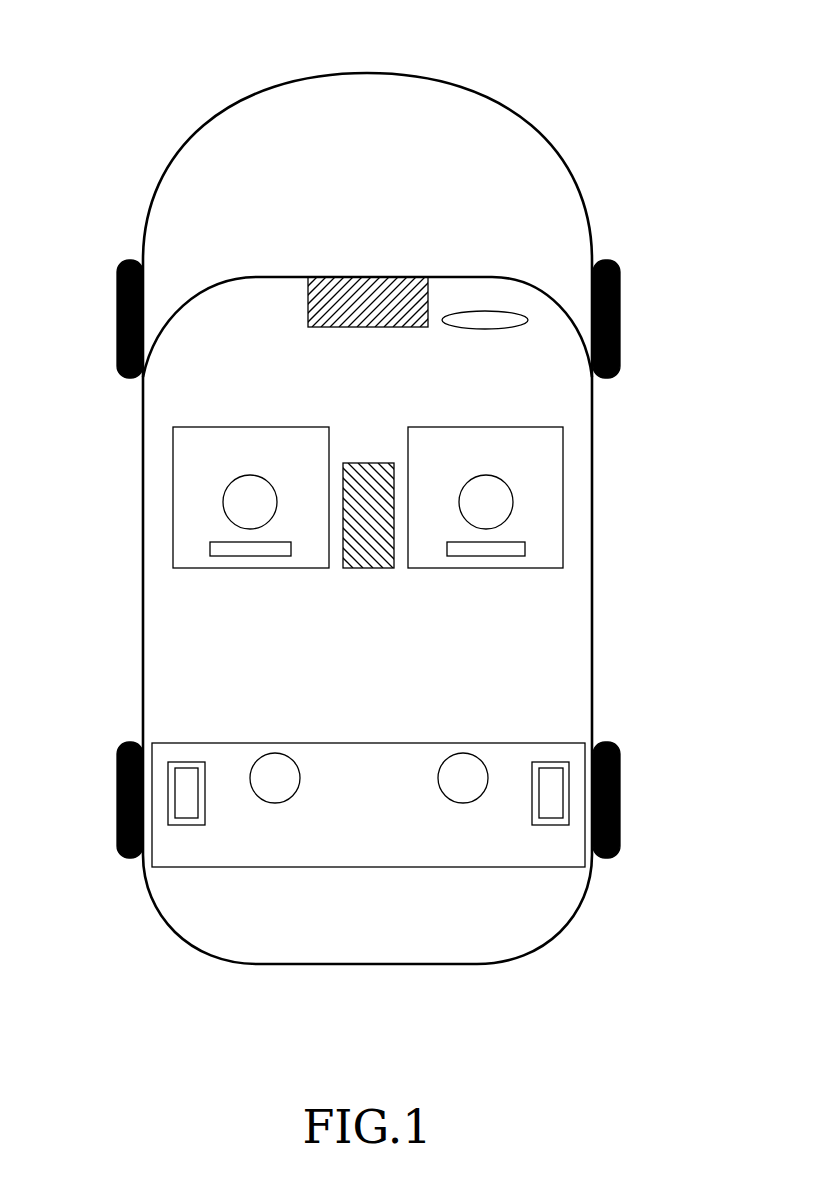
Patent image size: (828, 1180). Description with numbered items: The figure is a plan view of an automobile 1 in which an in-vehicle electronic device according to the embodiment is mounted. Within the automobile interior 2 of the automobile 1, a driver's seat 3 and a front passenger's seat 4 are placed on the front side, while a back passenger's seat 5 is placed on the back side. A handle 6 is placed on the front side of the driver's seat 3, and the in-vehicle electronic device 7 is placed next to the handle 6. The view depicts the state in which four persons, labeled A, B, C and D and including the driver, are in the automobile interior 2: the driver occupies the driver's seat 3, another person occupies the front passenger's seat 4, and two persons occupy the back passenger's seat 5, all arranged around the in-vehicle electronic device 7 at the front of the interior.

The automobile 1 is at (518, 104).
The automobile interior 2 is at (552, 393).
The driver's seat 3 is at (565, 497).
The front passenger's seat 4 is at (173, 497).
The back passenger's seat 5 is at (538, 743).
The handle 6 is at (485, 311).
The in-vehicle electronic device 7 is at (362, 277).